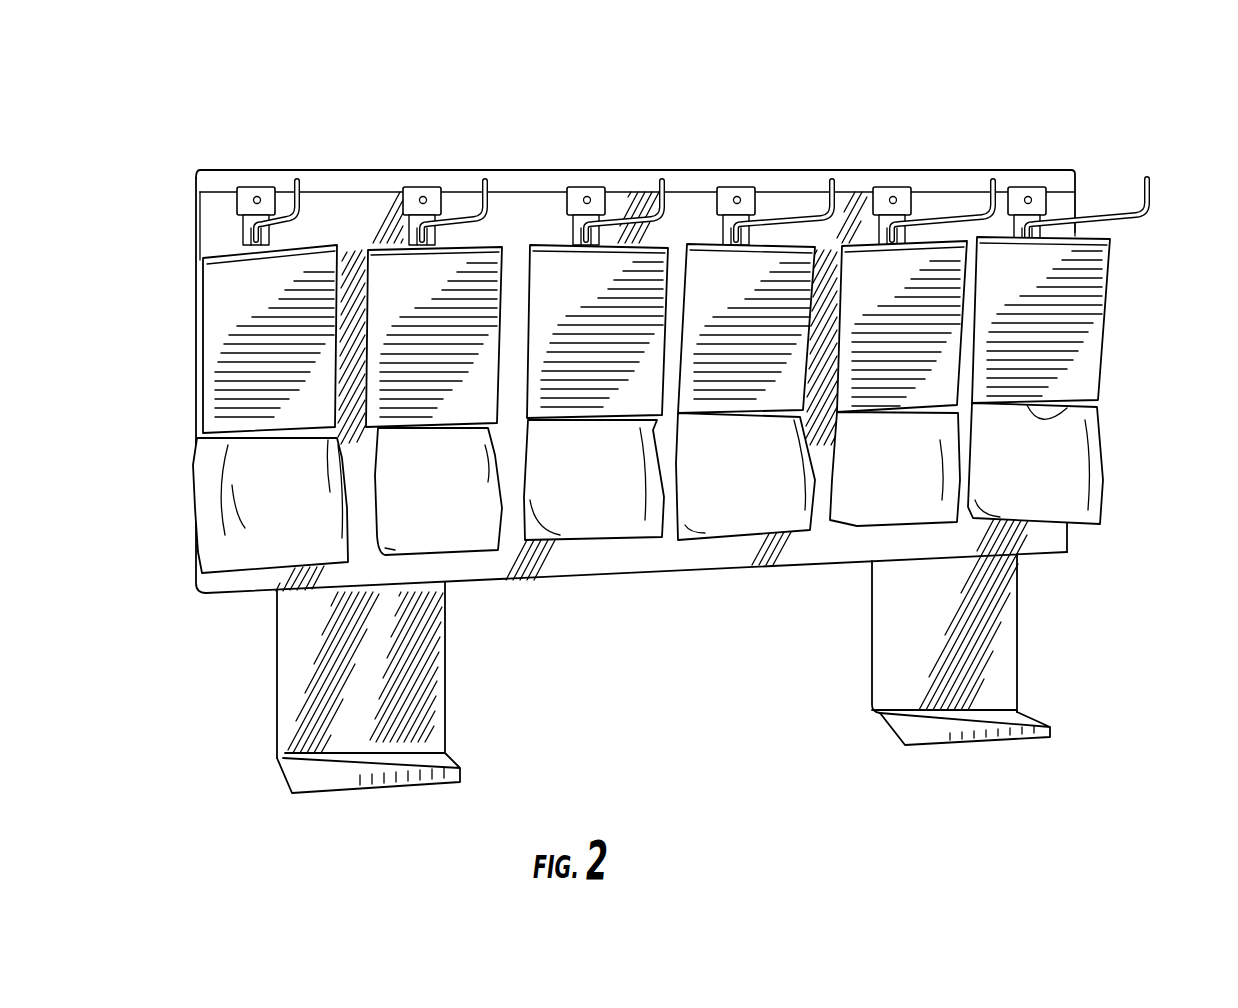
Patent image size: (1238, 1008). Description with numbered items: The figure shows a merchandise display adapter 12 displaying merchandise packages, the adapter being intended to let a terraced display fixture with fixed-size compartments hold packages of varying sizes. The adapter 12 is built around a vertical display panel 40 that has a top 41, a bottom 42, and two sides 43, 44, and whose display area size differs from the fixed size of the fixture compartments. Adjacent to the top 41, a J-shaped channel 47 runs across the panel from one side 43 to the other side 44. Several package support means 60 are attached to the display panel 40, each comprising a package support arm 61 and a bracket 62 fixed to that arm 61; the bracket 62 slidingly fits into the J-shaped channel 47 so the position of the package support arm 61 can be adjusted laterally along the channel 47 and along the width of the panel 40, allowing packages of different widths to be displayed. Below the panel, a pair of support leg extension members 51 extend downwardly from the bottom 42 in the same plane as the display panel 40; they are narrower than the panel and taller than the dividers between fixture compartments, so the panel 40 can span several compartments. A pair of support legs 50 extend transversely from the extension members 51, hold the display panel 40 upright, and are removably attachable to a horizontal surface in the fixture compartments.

The merchandise display adapter 12 is at (627, 150).
The display panel 40 is at (647, 548).
The top 41 is at (448, 171).
The bottom 42 is at (735, 568).
The side 43 is at (196, 233).
The side 44 is at (1053, 530).
The J-shaped channel 47 is at (333, 190).
The support leg 50 is at (393, 787).
The support leg extension member 51 is at (355, 665).
The package support means 60 is at (1097, 188).
The package support arm 61 is at (1127, 214).
The bracket 62 is at (1016, 188).